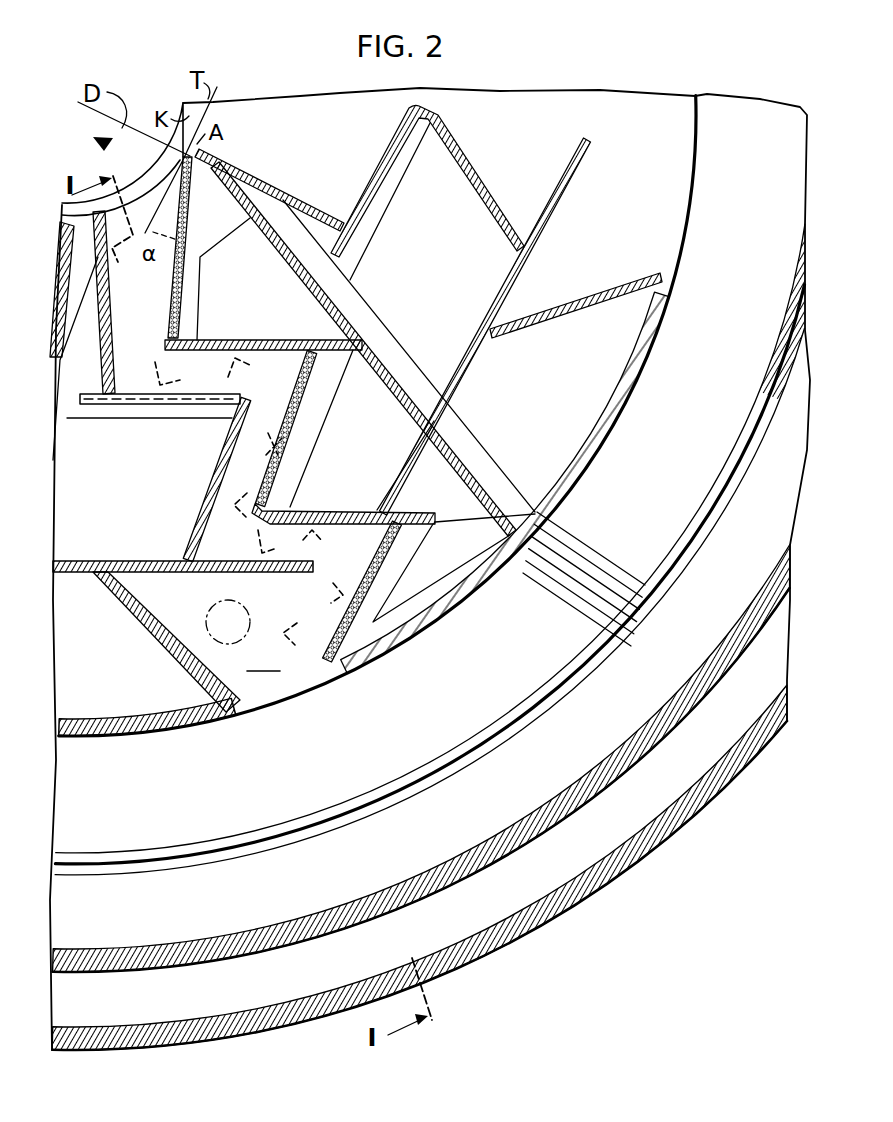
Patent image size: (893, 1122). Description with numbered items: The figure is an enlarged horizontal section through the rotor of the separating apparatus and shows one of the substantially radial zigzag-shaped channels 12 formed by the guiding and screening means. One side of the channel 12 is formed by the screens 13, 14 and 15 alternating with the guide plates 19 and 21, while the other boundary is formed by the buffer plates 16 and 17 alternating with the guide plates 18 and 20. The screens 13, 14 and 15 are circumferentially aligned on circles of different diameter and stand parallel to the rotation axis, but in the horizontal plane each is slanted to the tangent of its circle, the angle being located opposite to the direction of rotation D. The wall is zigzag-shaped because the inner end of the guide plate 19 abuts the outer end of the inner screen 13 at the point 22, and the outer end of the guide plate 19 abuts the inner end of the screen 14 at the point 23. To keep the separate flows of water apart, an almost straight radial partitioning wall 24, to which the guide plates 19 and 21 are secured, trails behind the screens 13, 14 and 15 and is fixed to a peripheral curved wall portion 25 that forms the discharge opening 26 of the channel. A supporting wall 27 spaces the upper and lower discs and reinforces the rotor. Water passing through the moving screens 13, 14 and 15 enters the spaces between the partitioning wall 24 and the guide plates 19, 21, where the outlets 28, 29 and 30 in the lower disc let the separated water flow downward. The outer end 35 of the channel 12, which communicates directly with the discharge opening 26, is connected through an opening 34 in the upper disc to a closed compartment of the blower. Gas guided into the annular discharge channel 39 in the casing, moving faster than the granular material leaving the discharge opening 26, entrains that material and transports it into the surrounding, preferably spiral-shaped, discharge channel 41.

The zigzag-shaped channel 12 is at (210, 404).
The screen 13 is at (175, 266).
The screen 14 is at (298, 430).
The screen 15 is at (378, 551).
The buffer plate 16 is at (133, 404).
The buffer plate 17 is at (246, 572).
The guide plate 18 is at (106, 360).
The guide plate 19 is at (275, 342).
The guide plate 20 is at (206, 497).
The guide plate 21 is at (328, 512).
The point 22 is at (198, 315).
The point 23 is at (318, 352).
The radial partitioning wall 24 is at (380, 330).
The peripheral curved wall portion 25 is at (561, 503).
The discharge opening 26 is at (313, 690).
The supporting wall 27 is at (463, 376).
The outlet 28 is at (257, 255).
The outlet 29 is at (408, 413).
The outlet 30 is at (470, 503).
The opening 34 is at (210, 616).
The outer end of zigzag-shaped channel 35 is at (263, 657).
The annular discharge channel 39 is at (598, 745).
The discharge channel 41 is at (551, 880).